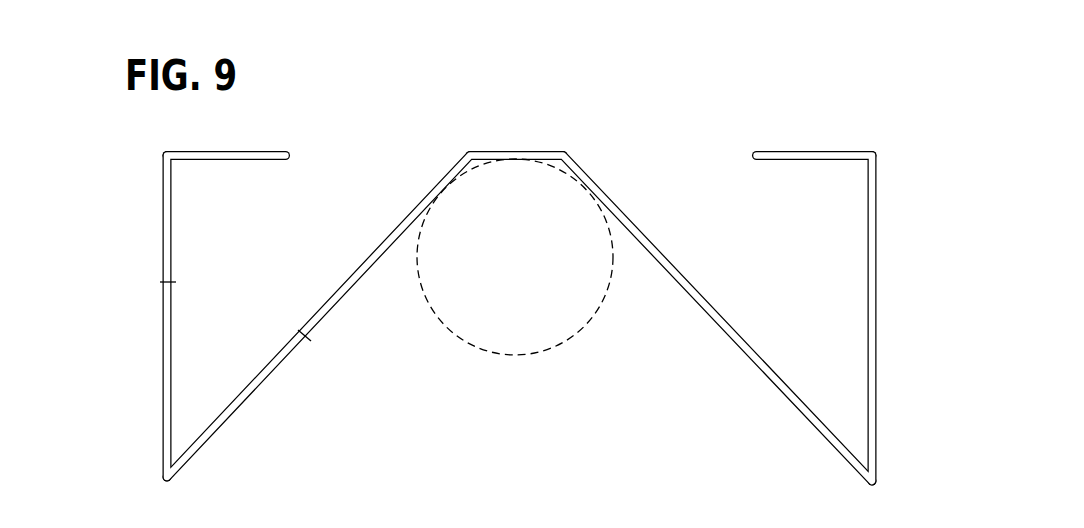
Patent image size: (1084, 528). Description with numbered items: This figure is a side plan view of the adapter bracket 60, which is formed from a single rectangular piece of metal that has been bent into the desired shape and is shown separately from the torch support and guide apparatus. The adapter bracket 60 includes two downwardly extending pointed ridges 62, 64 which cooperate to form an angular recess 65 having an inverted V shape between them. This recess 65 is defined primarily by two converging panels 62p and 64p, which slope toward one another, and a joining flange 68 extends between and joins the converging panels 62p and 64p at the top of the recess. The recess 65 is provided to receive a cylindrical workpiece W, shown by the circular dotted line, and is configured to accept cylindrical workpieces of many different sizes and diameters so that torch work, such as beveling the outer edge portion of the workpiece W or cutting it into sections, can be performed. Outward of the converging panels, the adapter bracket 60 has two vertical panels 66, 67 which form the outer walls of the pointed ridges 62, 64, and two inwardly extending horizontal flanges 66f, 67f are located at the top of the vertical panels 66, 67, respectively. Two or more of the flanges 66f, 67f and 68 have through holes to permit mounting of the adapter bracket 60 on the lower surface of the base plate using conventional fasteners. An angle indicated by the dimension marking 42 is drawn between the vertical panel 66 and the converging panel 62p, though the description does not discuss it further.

The adapter bracket 60 is at (502, 258).
The pointed ridge 62 is at (255, 302).
The converging panel 62p is at (287, 367).
The pointed ridge 64 is at (764, 317).
The converging panel 64p is at (780, 402).
The angular recess 65 is at (570, 243).
The vertical panel 66 is at (155, 252).
The horizontal flange 66f is at (267, 148).
The vertical panel 67 is at (887, 275).
The horizontal flange 67f is at (773, 148).
The joining flange 68 is at (507, 148).
The angle 42 is at (305, 335).
The workpiece W is at (540, 292).